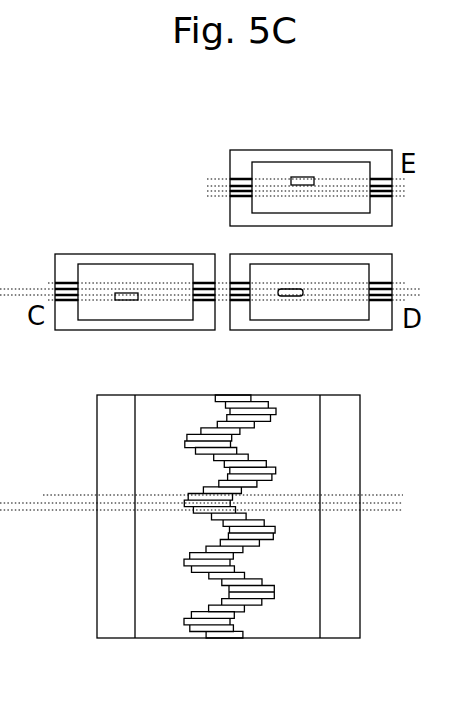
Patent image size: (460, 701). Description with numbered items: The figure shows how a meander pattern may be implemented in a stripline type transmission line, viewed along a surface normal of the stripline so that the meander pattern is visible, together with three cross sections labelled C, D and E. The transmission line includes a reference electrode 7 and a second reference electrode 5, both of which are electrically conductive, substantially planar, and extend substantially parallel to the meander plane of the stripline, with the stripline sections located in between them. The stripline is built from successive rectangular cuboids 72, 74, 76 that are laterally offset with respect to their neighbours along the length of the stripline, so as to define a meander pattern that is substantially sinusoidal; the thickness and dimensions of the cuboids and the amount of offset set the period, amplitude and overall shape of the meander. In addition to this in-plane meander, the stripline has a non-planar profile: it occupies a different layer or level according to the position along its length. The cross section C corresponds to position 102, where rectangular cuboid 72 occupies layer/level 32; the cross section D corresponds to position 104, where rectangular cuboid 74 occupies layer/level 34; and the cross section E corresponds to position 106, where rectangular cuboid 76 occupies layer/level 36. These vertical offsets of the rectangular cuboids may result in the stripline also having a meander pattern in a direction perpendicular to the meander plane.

The second reference electrode 5 is at (64, 250).
The reference electrode 7 is at (231, 205).
The layer/level 32 is at (145, 289).
The layer/level 34 is at (163, 282).
The layer/level 36 is at (180, 281).
The rectangular cuboid 72 is at (116, 284).
The rectangular cuboid 74 is at (315, 284).
The rectangular cuboid 76 is at (292, 177).
The position 102 is at (67, 513).
The position 104 is at (23, 499).
The position 106 is at (69, 491).